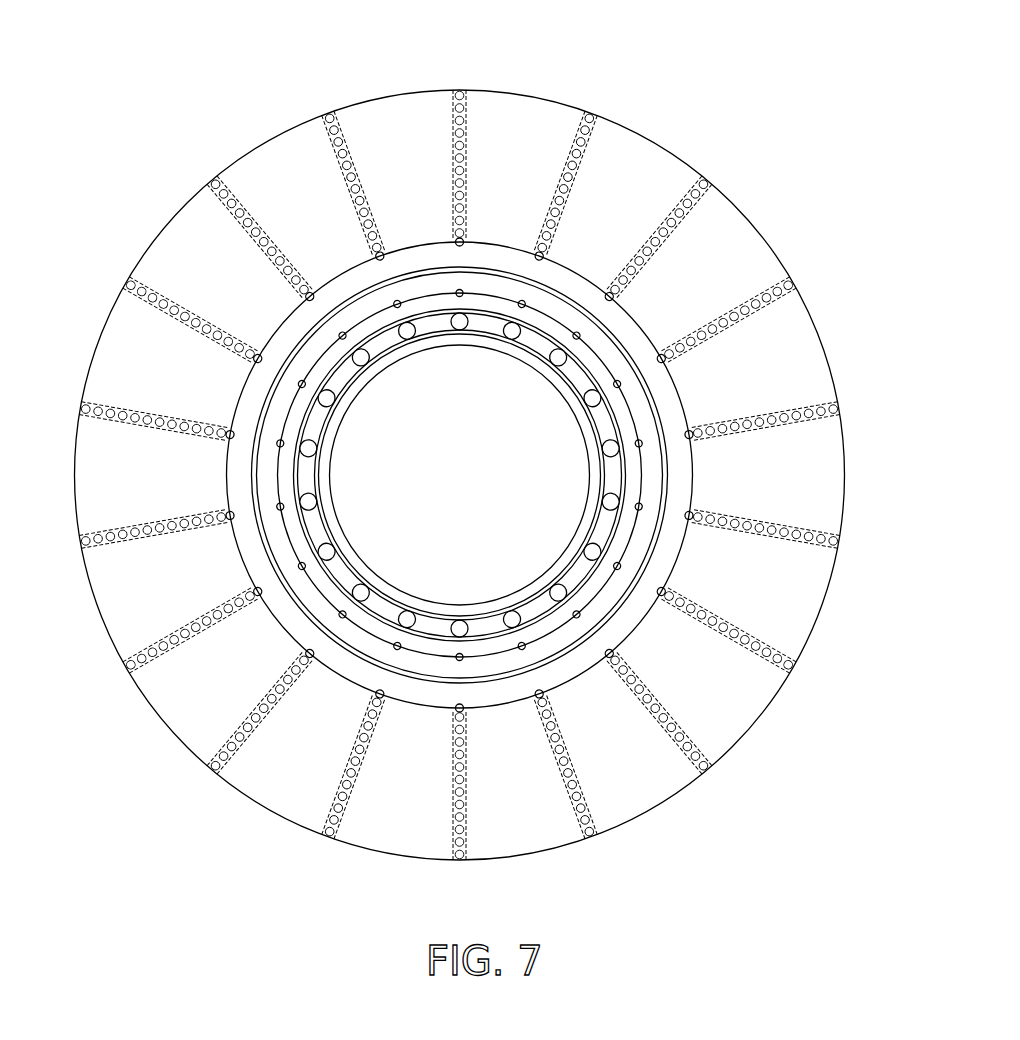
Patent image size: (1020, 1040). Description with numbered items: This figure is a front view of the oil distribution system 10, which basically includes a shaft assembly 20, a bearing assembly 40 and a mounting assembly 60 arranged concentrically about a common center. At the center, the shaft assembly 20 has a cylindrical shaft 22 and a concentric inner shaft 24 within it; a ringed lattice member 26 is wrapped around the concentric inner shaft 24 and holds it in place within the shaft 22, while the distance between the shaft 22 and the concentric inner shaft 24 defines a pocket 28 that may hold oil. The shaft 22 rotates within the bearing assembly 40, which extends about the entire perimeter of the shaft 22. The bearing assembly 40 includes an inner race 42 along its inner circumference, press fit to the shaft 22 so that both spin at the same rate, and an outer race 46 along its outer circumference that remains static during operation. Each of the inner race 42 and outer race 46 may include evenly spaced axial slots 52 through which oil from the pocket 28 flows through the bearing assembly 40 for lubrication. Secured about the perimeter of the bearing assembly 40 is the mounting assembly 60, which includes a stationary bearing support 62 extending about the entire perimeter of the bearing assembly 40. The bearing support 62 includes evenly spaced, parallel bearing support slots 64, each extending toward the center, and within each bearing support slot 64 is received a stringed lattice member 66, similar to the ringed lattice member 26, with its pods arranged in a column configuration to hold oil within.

The oil distribution system 10 is at (131, 110).
The shaft assembly 20 is at (276, 551).
The shaft 22 is at (293, 518).
The concentric inner shaft 24 is at (327, 474).
The ringed lattice member 26 is at (368, 350).
The pocket 28 is at (432, 320).
The bearing assembly 40 is at (274, 637).
The inner race 42 is at (275, 415).
The outer race 46 is at (482, 695).
The axial slots 52 is at (381, 695).
The mounting assembly 60 is at (504, 86).
The bearing support 62 is at (826, 478).
The bearing support slots 64 is at (833, 540).
The stringed lattice member 66 is at (782, 660).